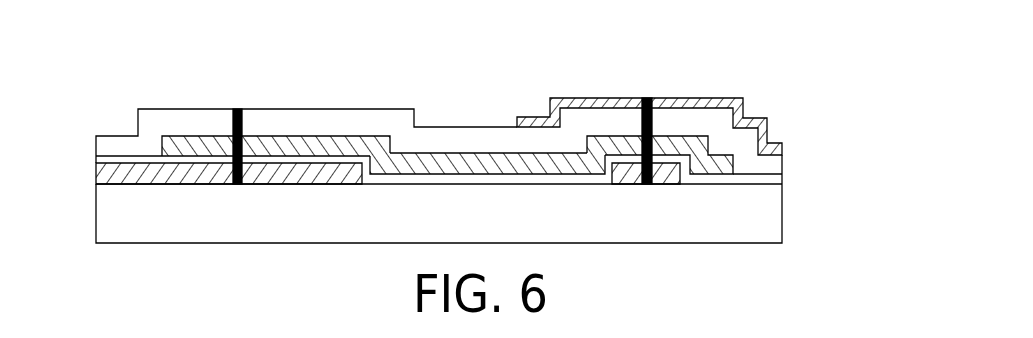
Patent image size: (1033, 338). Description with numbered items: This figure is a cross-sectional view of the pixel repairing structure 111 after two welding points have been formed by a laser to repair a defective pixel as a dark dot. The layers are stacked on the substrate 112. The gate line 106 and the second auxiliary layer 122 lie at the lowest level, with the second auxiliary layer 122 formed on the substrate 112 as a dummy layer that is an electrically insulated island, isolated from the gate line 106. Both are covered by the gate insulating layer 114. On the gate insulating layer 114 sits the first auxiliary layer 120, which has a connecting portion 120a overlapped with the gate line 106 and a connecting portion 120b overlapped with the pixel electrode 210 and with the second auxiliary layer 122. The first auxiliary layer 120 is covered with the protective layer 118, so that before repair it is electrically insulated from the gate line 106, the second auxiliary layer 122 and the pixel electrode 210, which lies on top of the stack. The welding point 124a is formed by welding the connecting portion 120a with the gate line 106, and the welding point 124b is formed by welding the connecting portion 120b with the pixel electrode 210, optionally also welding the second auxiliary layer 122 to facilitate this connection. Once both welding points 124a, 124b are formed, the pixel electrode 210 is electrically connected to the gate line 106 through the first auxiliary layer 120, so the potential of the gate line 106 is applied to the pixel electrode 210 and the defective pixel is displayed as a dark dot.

The pixel repairing structure 111 is at (768, 25).
The substrate 112 is at (772, 208).
The gate insulating layer 114 is at (776, 182).
The gate line 106 is at (212, 173).
The second auxiliary layer 122 is at (663, 184).
The first auxiliary layer 120 is at (473, 162).
The connecting portion 120a is at (200, 148).
The connecting portion 120b is at (680, 145).
The protective layer 118 is at (772, 165).
The pixel electrode 210 is at (745, 117).
The welding point 124a is at (243, 121).
The welding point 124b is at (637, 98).